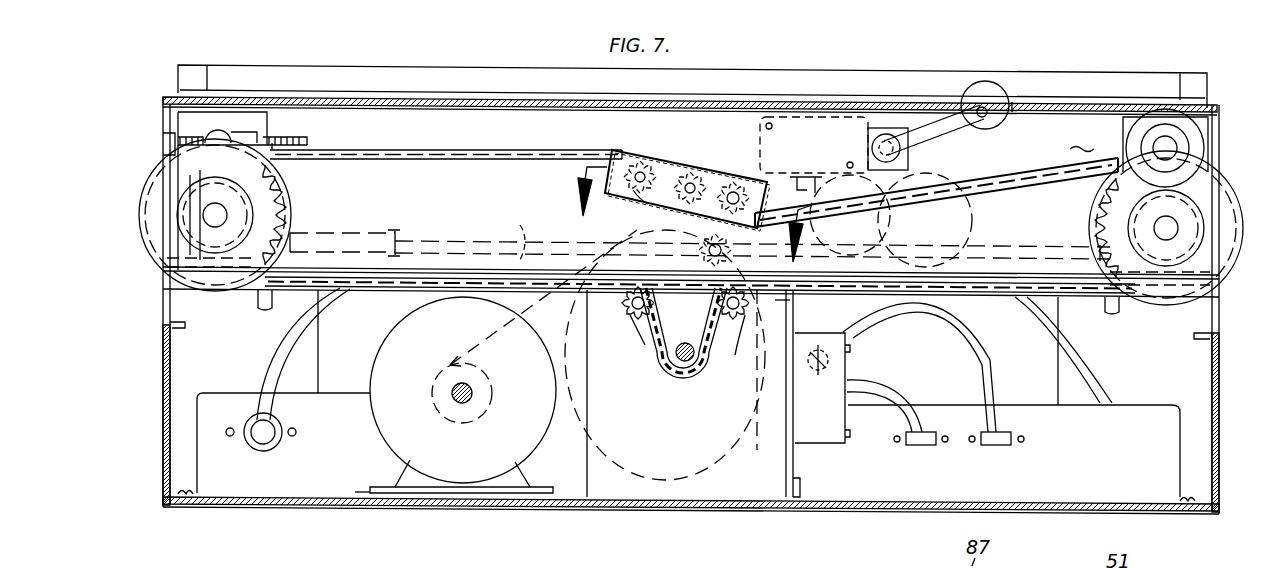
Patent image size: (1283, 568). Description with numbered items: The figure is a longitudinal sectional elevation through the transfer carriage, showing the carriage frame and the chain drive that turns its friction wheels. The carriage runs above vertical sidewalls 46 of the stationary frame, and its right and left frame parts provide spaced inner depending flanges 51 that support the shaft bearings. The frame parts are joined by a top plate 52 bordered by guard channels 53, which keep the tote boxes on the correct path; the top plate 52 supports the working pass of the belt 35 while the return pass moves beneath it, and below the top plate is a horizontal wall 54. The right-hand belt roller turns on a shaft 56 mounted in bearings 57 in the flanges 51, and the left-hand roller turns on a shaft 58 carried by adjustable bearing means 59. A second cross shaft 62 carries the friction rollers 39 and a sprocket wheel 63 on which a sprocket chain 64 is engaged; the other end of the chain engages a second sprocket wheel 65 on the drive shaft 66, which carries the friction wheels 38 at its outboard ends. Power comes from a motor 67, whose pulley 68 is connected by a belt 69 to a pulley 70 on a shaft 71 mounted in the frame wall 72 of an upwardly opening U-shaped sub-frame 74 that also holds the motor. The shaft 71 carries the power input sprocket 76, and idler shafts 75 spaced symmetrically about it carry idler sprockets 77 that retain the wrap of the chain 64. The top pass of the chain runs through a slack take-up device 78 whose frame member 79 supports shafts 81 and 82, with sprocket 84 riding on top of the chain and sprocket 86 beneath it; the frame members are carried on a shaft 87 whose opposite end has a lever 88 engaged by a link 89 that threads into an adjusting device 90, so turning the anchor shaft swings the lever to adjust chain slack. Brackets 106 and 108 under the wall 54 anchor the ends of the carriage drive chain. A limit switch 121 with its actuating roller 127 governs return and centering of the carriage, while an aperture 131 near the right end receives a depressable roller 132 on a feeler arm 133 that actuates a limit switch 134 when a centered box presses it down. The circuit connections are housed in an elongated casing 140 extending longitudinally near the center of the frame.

The belt 35 is at (366, 89).
The friction wheels 38 is at (150, 250).
The friction rollers 39 is at (1240, 245).
The vertical sidewalls 46 is at (167, 305).
The depending flanges 51 is at (1082, 138).
The top plate 52 is at (420, 108).
The guard channels 53 is at (462, 88).
The horizontal wall 54 is at (450, 507).
The shaft 56 is at (1178, 149).
The bearings 57 is at (1175, 140).
The shaft 58 is at (218, 132).
The adjustable bearing means 59 is at (176, 128).
The second cross shaft 62 is at (1172, 228).
The sprocket wheel 63 is at (1090, 216).
The sprocket chain 64 is at (438, 238).
The second sprocket wheel 65 is at (290, 214).
The drive shaft 66 is at (212, 214).
The motor 67 is at (395, 340).
The pulley 68 is at (432, 376).
The belt 69 is at (565, 455).
The pulley 70 is at (730, 480).
The shaft 71 is at (682, 365).
The frame wall 72 is at (793, 465).
The U-shaped sub-frame 74 is at (340, 490).
The idler shafts 75 is at (630, 320).
The power input sprocket 76 is at (690, 332).
The idler sprockets 77 is at (655, 345).
The slack take-up device 78 is at (685, 153).
The frame member 79 is at (620, 152).
The shaft 81 is at (760, 180).
The shaft 82 is at (638, 182).
The sprocket 84 is at (740, 180).
The sprocket 86 is at (646, 204).
The shaft 87 is at (698, 172).
The lever 88 is at (732, 250).
The link 89 is at (520, 240).
The adjusting device 90 is at (372, 235).
The bracket 106 is at (1112, 305).
The bracket 108 is at (265, 302).
The limit switch 121 is at (847, 368).
The roller 127 is at (790, 300).
The aperture 131 is at (1020, 105).
The depressable roller 132 is at (988, 85).
The feeler arm 133 is at (930, 136).
The limit switch 134 is at (818, 150).
The elongated casing 140 is at (222, 393).